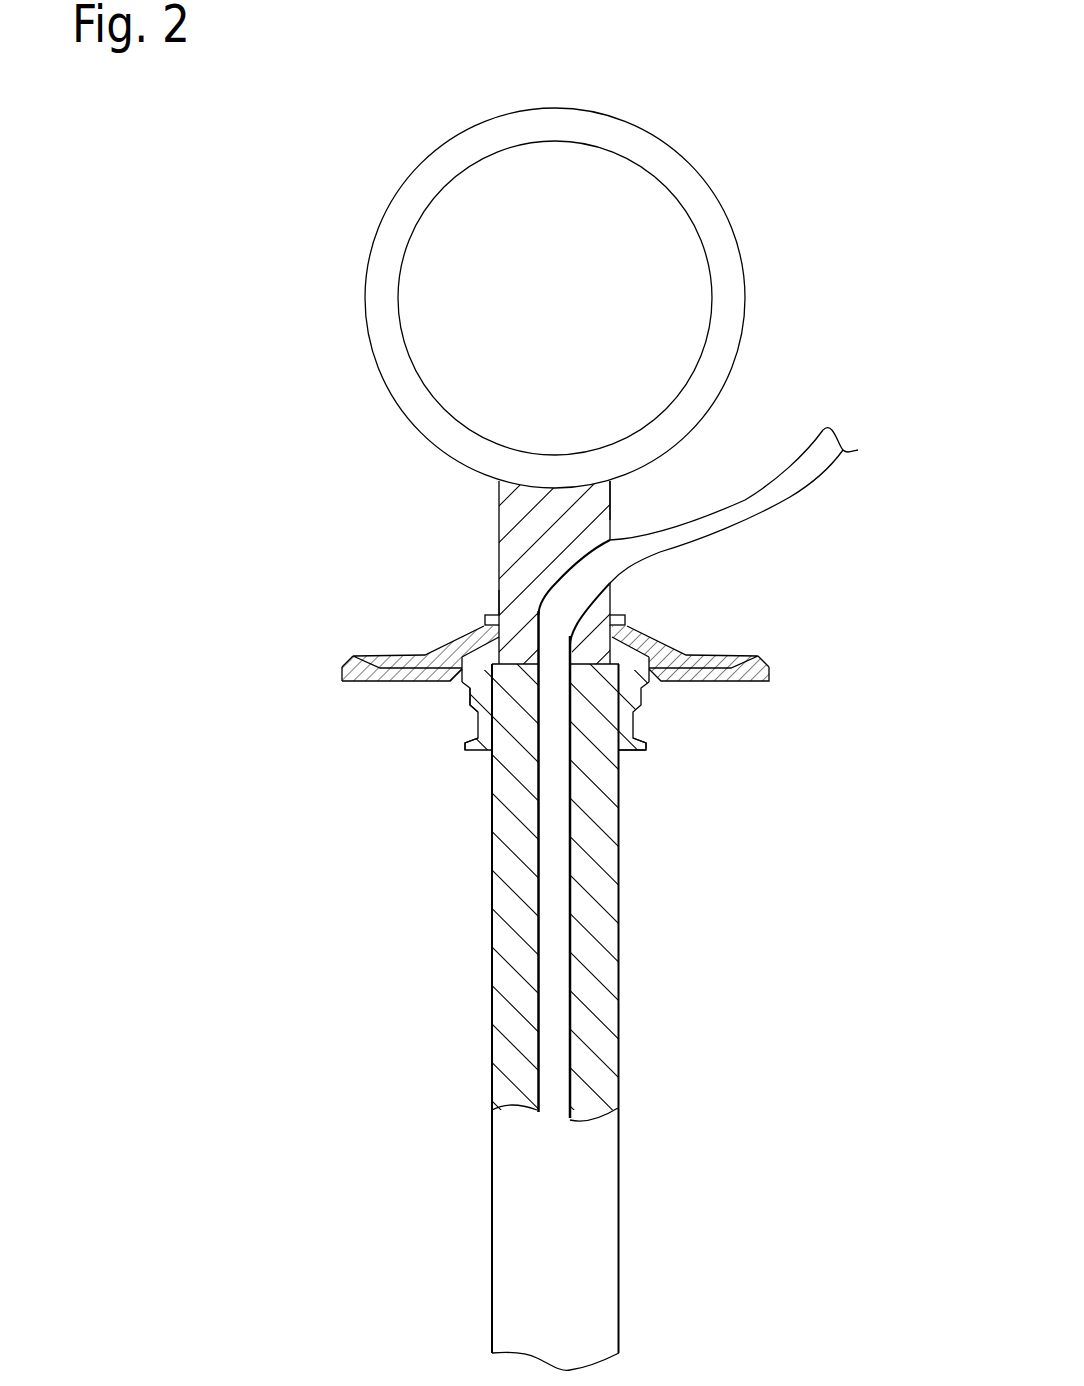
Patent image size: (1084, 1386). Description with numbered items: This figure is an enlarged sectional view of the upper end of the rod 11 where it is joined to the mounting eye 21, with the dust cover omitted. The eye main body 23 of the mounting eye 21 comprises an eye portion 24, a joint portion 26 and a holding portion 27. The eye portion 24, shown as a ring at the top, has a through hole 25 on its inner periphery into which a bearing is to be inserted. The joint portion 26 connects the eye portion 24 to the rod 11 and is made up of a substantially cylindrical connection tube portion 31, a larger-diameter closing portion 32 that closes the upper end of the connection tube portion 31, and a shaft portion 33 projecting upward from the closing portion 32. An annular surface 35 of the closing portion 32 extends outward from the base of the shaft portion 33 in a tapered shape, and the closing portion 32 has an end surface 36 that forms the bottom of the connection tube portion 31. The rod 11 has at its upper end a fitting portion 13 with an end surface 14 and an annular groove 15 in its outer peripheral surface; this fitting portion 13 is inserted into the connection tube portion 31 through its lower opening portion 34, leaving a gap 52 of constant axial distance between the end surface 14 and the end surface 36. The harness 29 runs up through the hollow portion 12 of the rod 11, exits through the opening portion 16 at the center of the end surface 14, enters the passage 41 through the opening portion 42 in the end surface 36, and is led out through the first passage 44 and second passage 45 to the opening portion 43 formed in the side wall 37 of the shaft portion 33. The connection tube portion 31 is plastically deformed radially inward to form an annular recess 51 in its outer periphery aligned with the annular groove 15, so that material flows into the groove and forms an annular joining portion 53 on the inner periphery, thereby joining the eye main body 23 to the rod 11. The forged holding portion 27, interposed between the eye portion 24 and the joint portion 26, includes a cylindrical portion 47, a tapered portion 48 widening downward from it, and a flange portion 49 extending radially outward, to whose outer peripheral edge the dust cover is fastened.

The rod 11 is at (619, 1232).
The hollow portion 12 is at (538, 1092).
The fitting portion 13 is at (322, 680).
The end surface 14 is at (612, 641).
The annular groove 15 is at (690, 782).
The opening portion 16 is at (412, 768).
The mounting eye 21 is at (549, 269).
The eye main body 23 is at (549, 298).
The eye portion 24 is at (380, 215).
The through hole 25 is at (712, 262).
The joint portion 26 is at (522, 559).
The holding portion 27 is at (342, 668).
The harness 29 is at (828, 434).
The connection tube portion 31 is at (462, 747).
The closing portion 32 is at (493, 617).
The shaft portion 33 is at (532, 531).
The opening portion 34 is at (492, 748).
The annular surface 35 is at (480, 626).
The end surface 36 is at (572, 665).
The side wall 37 is at (520, 583).
The passage 41 is at (535, 606).
The opening portion 42 is at (641, 710).
The opening portion 43 is at (610, 538).
The first passage 44 is at (611, 603).
The second passage 45 is at (597, 545).
The cylindrical portion 47 is at (497, 605).
The tapered portion 48 is at (350, 656).
The flange portion 49 is at (342, 675).
The annular recess 51 is at (479, 712).
The gap 52 is at (614, 626).
The joining portion 53 is at (619, 752).